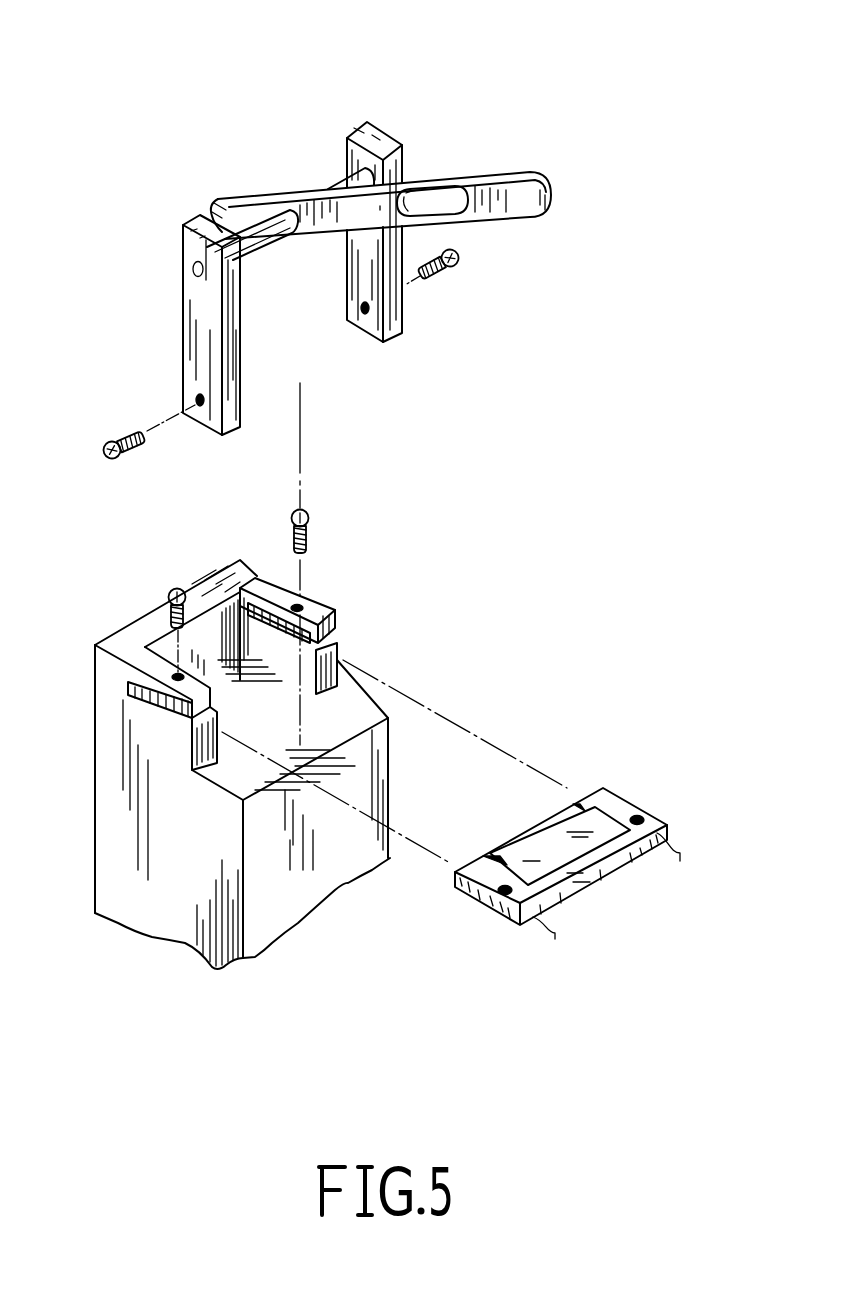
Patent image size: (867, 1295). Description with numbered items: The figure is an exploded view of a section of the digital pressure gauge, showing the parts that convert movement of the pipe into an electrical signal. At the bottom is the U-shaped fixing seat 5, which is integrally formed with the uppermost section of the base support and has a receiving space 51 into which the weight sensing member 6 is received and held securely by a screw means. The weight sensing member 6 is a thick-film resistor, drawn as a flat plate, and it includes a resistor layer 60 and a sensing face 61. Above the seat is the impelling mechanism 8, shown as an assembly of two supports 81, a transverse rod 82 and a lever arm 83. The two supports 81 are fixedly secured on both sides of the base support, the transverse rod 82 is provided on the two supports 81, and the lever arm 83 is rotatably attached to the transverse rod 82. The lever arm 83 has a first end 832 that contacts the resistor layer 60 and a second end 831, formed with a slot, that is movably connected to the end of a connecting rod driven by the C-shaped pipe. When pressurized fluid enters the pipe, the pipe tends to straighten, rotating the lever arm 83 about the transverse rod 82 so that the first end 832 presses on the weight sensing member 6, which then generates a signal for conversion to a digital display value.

The U-shaped fixing seat 5 is at (110, 692).
The receiving space 51 is at (333, 640).
The weight sensing member 6 is at (592, 740).
The resistor layer 60 is at (525, 832).
The sensing face 61 is at (515, 868).
The impelling mechanism 8 is at (300, 79).
The supports 81 is at (378, 180).
The transverse rod 82 is at (341, 181).
The lever arm 83 is at (254, 207).
The second end 831 is at (463, 213).
The first end 832 is at (212, 217).